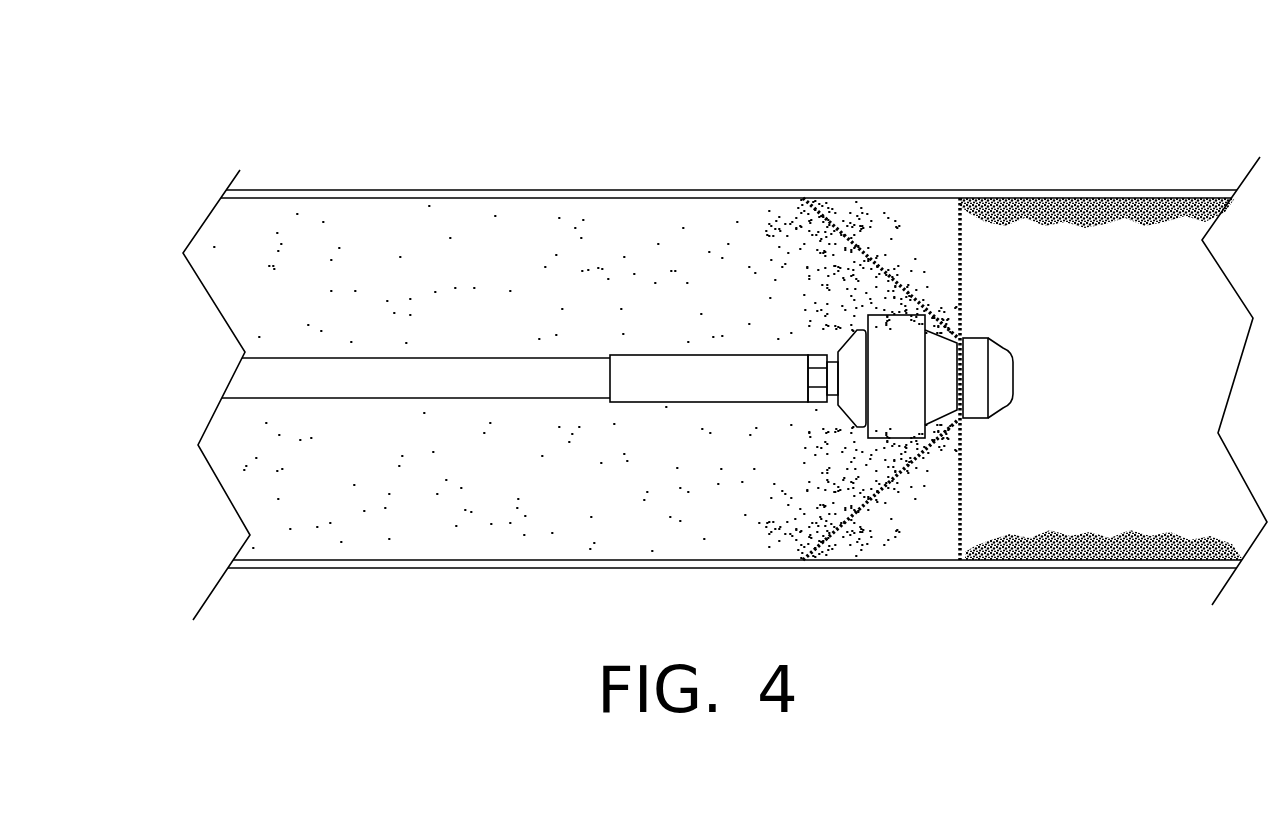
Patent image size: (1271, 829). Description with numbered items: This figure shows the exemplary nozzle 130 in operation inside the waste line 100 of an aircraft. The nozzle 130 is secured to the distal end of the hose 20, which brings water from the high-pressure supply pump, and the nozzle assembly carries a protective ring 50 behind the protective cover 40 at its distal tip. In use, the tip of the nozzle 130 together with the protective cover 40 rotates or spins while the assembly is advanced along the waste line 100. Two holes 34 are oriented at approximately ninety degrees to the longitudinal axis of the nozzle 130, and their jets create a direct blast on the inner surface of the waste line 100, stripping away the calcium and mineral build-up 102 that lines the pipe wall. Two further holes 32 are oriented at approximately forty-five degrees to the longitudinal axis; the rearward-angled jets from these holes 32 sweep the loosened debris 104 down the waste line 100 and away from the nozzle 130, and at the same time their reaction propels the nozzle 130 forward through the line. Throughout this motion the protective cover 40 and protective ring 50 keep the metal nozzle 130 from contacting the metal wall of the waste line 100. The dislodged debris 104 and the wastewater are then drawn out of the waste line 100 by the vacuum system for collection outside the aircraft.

The waste line 100 is at (1155, 190).
The calcium and mineral build-up 102 is at (1100, 557).
The loosened debris 104 is at (645, 508).
The hose 20 is at (452, 368).
The protective ring 50 is at (887, 320).
The protective cover 40 is at (973, 345).
The holes oriented at approximately 45° 32 is at (958, 338).
The holes oriented at approximately 90° 34 is at (965, 338).
The nozzle 130 is at (863, 430).